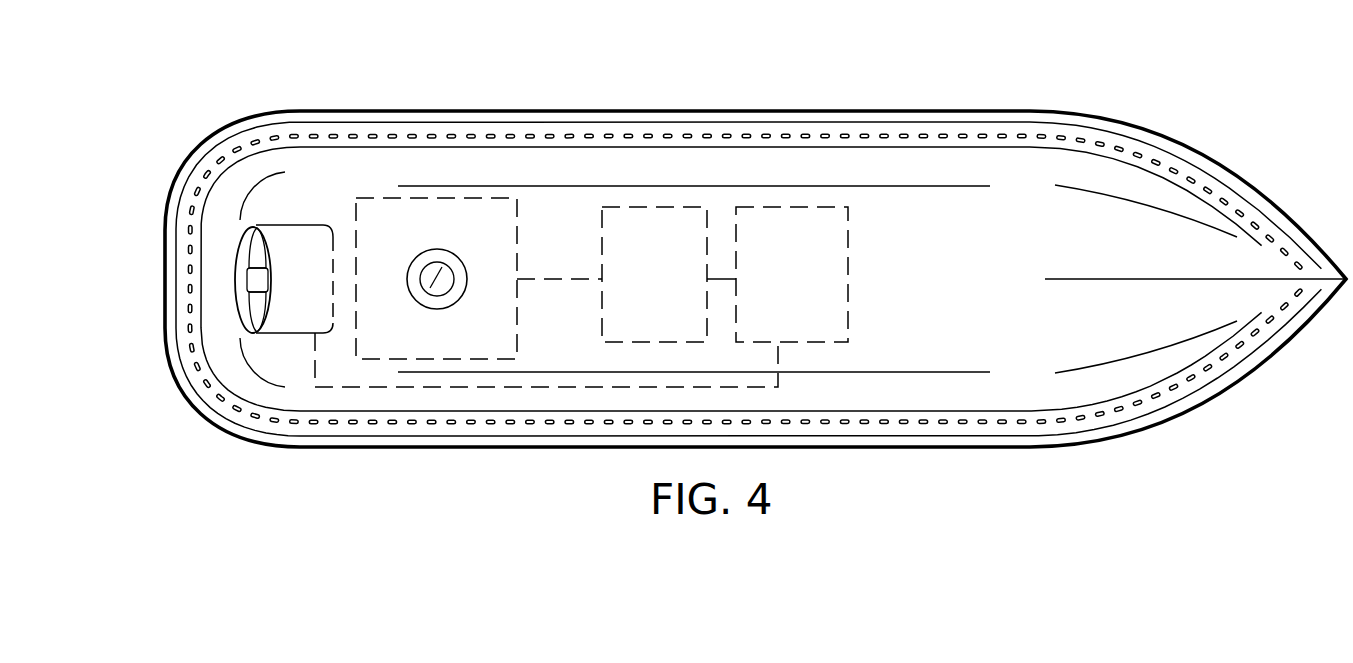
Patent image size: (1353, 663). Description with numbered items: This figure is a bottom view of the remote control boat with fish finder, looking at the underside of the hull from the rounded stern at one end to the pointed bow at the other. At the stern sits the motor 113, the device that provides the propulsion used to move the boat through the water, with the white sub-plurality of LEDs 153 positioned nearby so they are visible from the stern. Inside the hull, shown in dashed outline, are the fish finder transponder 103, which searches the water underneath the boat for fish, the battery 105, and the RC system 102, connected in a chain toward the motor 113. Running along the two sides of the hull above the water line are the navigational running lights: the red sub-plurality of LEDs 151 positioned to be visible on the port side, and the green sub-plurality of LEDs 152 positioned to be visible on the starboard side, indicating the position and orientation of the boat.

The RC system 102 is at (802, 230).
The fish finder transponder 103 is at (458, 210).
The battery 105 is at (648, 240).
The motor 113 is at (305, 245).
The red sub-plurality of LEDs 151 is at (1089, 134).
The green sub-plurality of LEDs 152 is at (1003, 425).
The white sub-plurality of LEDs 153 is at (218, 265).